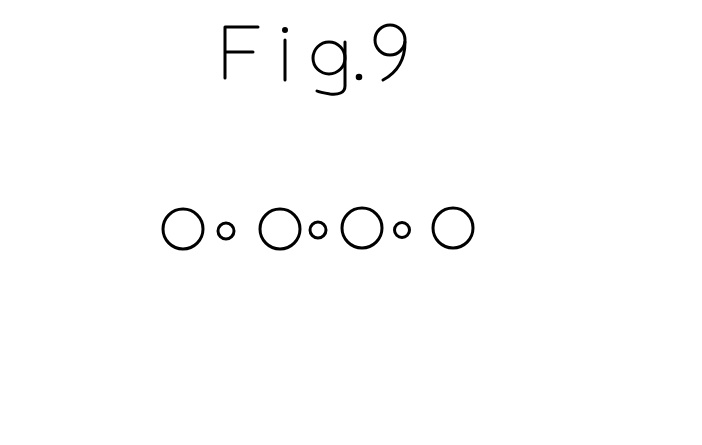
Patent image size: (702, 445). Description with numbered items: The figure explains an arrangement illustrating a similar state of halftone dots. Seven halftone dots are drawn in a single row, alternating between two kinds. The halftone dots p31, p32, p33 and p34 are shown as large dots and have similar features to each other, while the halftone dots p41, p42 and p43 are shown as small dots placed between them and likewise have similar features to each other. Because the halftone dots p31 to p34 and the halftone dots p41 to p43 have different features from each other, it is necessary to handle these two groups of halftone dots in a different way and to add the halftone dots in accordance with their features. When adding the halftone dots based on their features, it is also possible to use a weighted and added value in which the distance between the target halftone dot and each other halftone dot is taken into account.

The halftone dot p31 is at (165, 250).
The halftone dot p32 is at (275, 257).
The halftone dot p33 is at (367, 257).
The halftone dot p34 is at (468, 252).
The halftone dot p41 is at (223, 246).
The halftone dot p42 is at (315, 239).
The halftone dot p43 is at (403, 245).